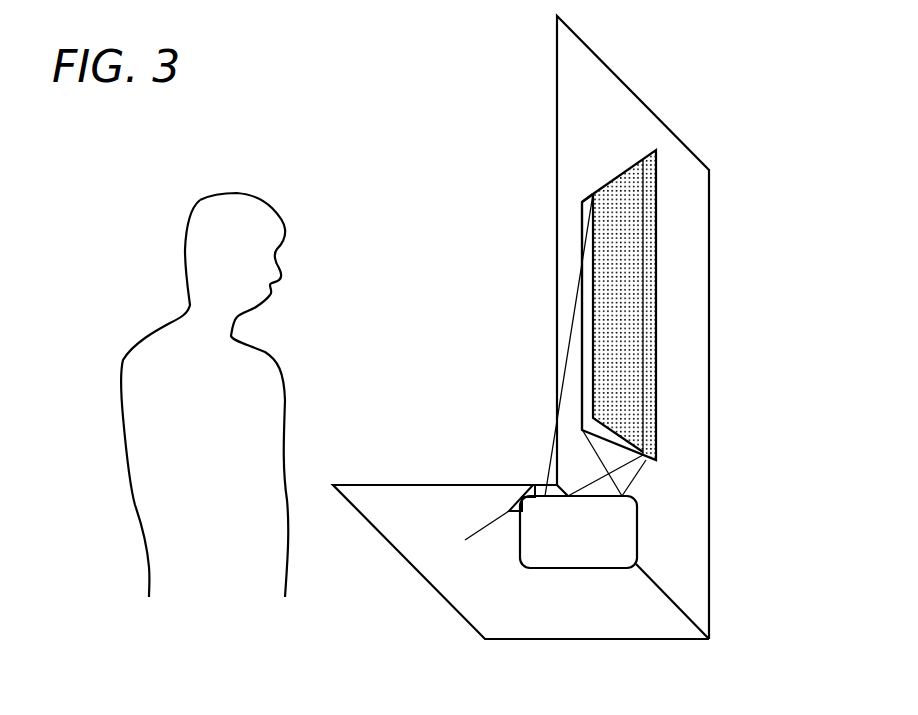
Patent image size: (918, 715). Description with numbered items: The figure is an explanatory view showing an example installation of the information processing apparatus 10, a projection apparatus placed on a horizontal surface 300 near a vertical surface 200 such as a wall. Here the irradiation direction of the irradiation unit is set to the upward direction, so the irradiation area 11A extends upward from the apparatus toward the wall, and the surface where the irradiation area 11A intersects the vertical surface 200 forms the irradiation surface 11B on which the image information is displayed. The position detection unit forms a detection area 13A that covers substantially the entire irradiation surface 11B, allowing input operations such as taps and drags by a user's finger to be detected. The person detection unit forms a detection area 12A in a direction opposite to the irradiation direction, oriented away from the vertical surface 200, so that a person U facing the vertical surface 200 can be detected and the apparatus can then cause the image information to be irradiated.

The person U is at (238, 192).
The vertical surface 200 is at (711, 358).
The horizontal surface 300 is at (574, 640).
The irradiation surface 11B is at (657, 262).
The detection area 13A is at (582, 203).
The irradiation area 11A is at (577, 312).
The detection area 12A is at (533, 485).
The information processing apparatus 10 is at (637, 535).